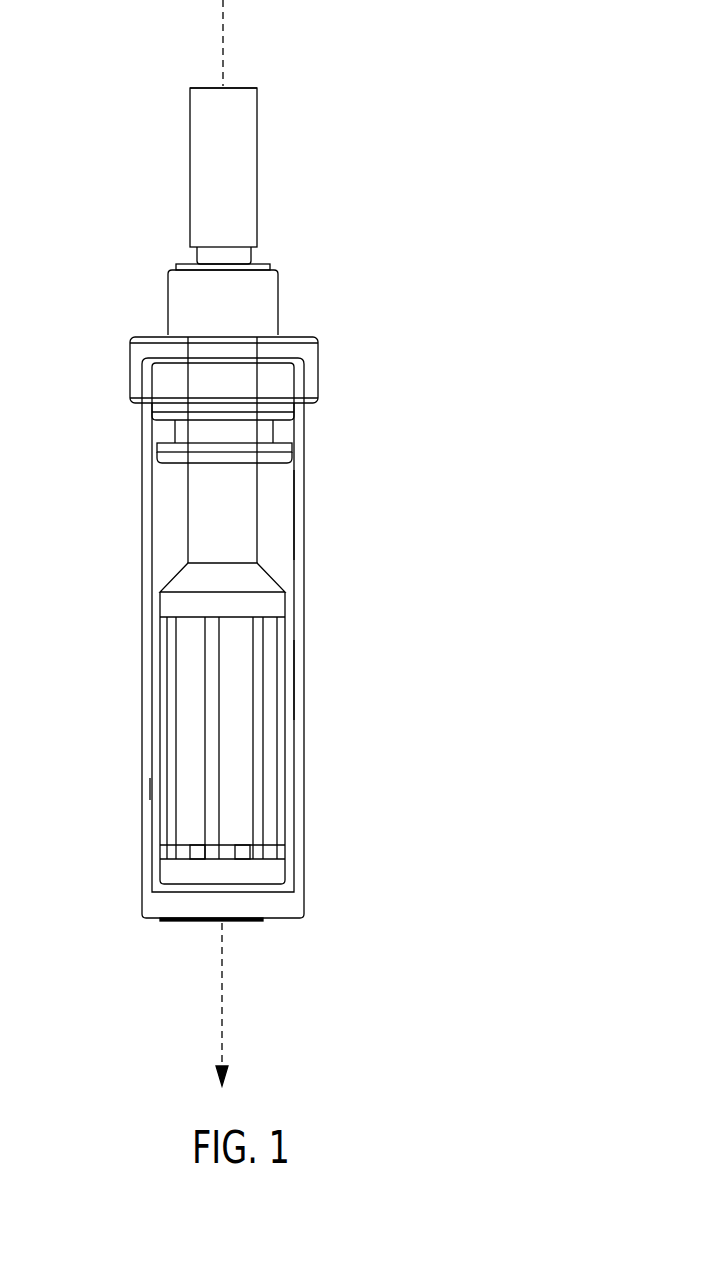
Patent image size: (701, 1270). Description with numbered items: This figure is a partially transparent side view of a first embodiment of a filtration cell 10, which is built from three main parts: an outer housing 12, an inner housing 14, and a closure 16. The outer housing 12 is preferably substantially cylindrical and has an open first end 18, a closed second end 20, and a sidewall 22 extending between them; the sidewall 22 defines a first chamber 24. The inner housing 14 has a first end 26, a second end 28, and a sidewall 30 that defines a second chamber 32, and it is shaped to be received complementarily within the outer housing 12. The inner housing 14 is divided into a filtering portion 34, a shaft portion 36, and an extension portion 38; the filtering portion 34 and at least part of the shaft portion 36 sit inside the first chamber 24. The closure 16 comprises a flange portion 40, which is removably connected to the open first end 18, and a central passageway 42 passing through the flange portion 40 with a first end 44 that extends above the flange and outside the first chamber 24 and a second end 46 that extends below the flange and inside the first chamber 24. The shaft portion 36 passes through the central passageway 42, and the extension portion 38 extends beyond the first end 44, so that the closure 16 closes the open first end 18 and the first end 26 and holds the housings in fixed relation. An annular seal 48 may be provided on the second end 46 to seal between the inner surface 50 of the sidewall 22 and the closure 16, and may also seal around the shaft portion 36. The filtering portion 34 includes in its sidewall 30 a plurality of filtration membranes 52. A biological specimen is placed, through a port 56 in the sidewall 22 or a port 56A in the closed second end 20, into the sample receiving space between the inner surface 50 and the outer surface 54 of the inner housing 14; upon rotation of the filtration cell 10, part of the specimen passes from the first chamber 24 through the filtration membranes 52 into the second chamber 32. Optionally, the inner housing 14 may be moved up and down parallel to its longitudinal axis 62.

The filtration cell 10 is at (360, 163).
The outer housing 12 is at (298, 470).
The inner housing 14 is at (270, 587).
The closure 16 is at (312, 355).
The open first end 18 is at (300, 362).
The closed second end 20 is at (258, 922).
The sidewall 22 is at (295, 682).
The first chamber 24 is at (292, 523).
The first end 26 is at (238, 87).
The second end 28 is at (275, 884).
The sidewall 30 is at (168, 610).
The second chamber 32 is at (205, 72).
The filtering portion 34 is at (160, 713).
The shaft portion 36 is at (196, 513).
The extension portion 38 is at (198, 173).
The flange portion 40 is at (137, 353).
The central passageway 42 is at (177, 303).
The first end 44 is at (174, 266).
The second end 46 is at (158, 458).
The annular seal 48 is at (158, 448).
The inner surface 50 is at (160, 790).
The filtration membrane 52 is at (246, 778).
The outer surface 54 is at (150, 653).
The port 56 is at (268, 264).
The port 56A is at (158, 922).
The longitudinal axis 62 is at (222, 1007).